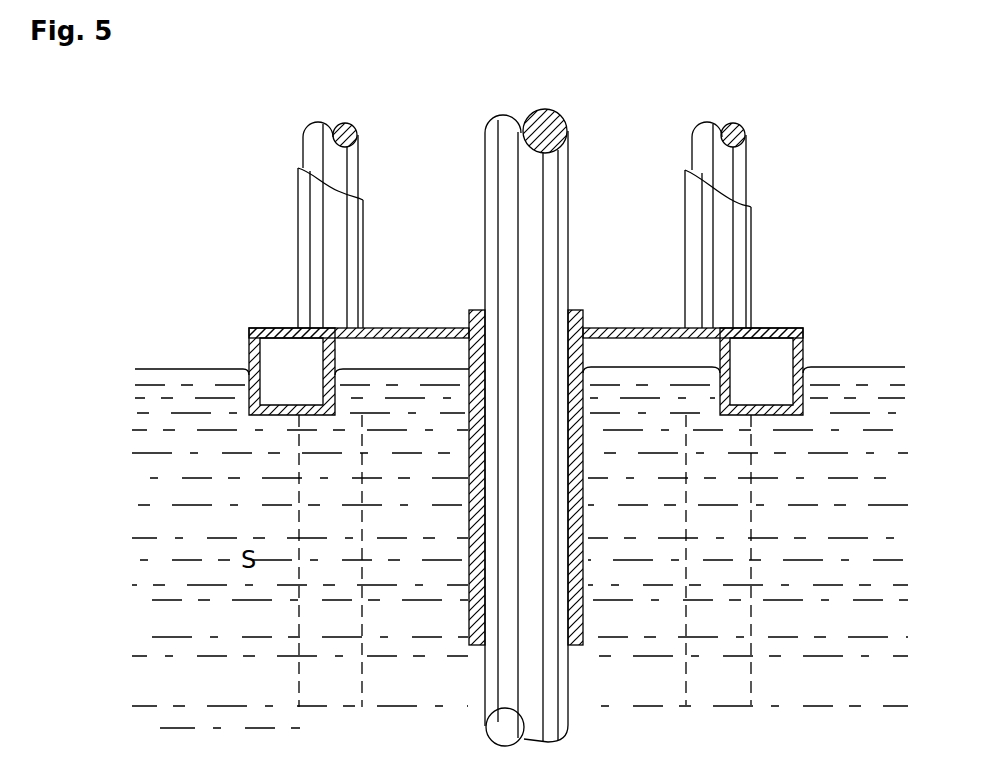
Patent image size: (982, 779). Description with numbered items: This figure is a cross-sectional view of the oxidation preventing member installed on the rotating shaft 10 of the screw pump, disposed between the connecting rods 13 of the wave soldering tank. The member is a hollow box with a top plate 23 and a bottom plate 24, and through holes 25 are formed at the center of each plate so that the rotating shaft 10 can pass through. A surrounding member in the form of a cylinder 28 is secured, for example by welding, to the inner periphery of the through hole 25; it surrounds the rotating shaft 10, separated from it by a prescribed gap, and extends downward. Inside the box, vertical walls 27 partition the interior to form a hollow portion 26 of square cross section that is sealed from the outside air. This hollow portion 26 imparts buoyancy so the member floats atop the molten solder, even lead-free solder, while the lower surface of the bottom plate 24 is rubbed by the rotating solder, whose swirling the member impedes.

The rotating shaft 10 is at (570, 198).
The connecting rods 13 is at (298, 222).
The top plate 23 is at (418, 328).
The bottom plate 24 is at (312, 412).
The through holes 25 is at (590, 326).
The hollow portion 26 is at (274, 357).
The vertical walls 27 is at (337, 347).
The cylinder 28 is at (578, 319).